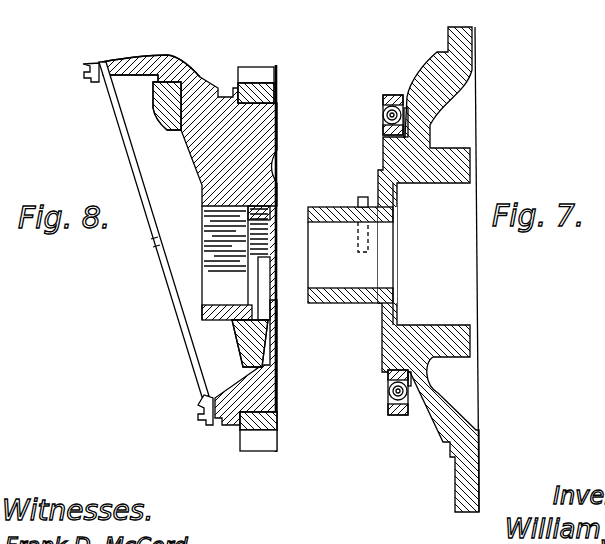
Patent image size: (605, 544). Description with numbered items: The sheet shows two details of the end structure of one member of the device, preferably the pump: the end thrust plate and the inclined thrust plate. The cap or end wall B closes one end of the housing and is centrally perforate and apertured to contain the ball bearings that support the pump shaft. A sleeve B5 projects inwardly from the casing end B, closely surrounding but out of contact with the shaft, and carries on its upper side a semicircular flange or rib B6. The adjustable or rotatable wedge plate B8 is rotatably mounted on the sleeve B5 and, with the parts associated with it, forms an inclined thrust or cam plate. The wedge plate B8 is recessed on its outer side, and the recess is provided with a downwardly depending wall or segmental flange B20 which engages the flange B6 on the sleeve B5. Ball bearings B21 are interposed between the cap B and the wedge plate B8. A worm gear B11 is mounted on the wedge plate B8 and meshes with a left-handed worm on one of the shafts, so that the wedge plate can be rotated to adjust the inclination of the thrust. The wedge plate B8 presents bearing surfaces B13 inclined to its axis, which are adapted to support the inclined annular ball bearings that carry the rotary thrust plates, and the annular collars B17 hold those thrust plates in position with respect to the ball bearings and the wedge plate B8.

In FIG. 7, the cap or end wall B is at (495, 403).
In FIG. 7, the sleeve B5 is at (347, 333).
In FIG. 7, the semicircular flange or rib B6 is at (358, 197).
In FIG. 8, the wedge plate B8 is at (245, 138).
In FIG. 8, the worm gear B11 is at (263, 451).
In FIG. 8, the inclined bearing surface B13 is at (214, 56).
In FIG. 8, the annular collar B17 is at (78, 108).
In FIG. 8, the segmental flange B20 is at (305, 346).
In FIG. 7, the ball bearing B21 is at (392, 112).